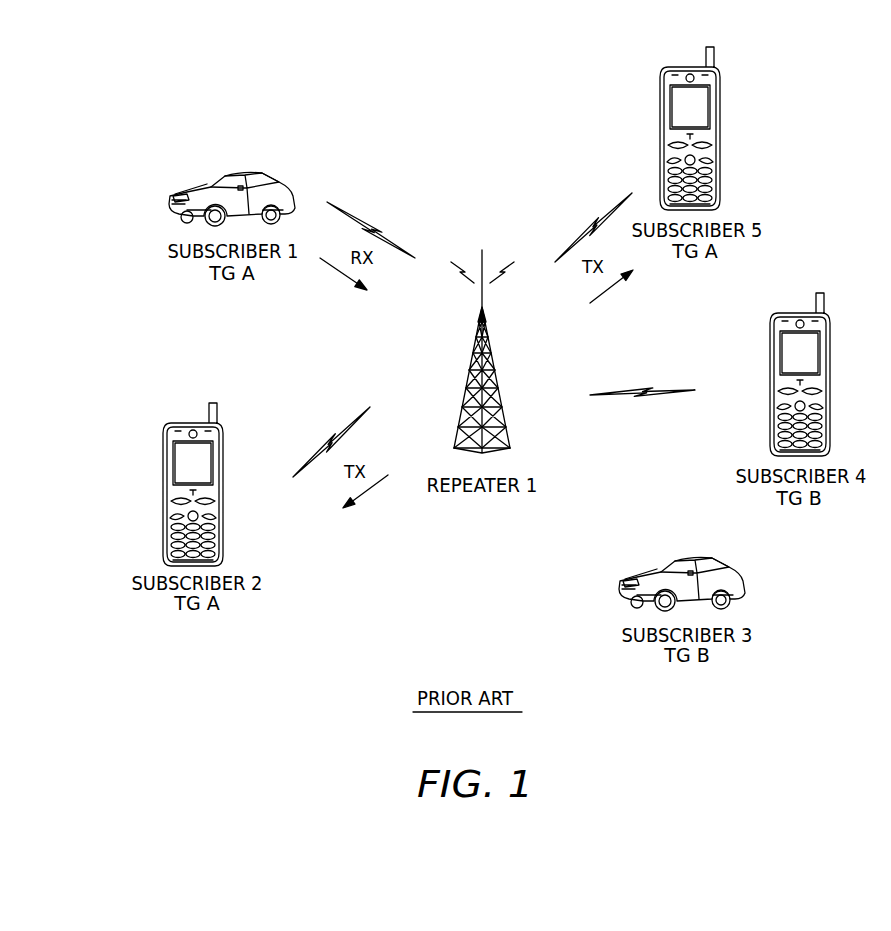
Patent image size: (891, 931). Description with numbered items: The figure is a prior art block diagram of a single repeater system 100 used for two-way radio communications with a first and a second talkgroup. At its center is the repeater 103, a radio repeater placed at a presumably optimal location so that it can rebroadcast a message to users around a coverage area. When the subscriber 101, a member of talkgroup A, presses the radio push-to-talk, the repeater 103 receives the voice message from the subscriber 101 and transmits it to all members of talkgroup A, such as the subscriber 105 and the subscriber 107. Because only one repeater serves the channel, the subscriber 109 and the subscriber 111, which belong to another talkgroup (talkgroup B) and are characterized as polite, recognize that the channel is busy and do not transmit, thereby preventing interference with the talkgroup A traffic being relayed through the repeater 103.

The single repeater system 100 is at (112, 78).
The subscriber 101 is at (236, 170).
The repeater 103 is at (495, 365).
The subscriber 105 is at (164, 495).
The subscriber 107 is at (722, 124).
The subscriber 109 is at (699, 555).
The subscriber 111 is at (832, 380).